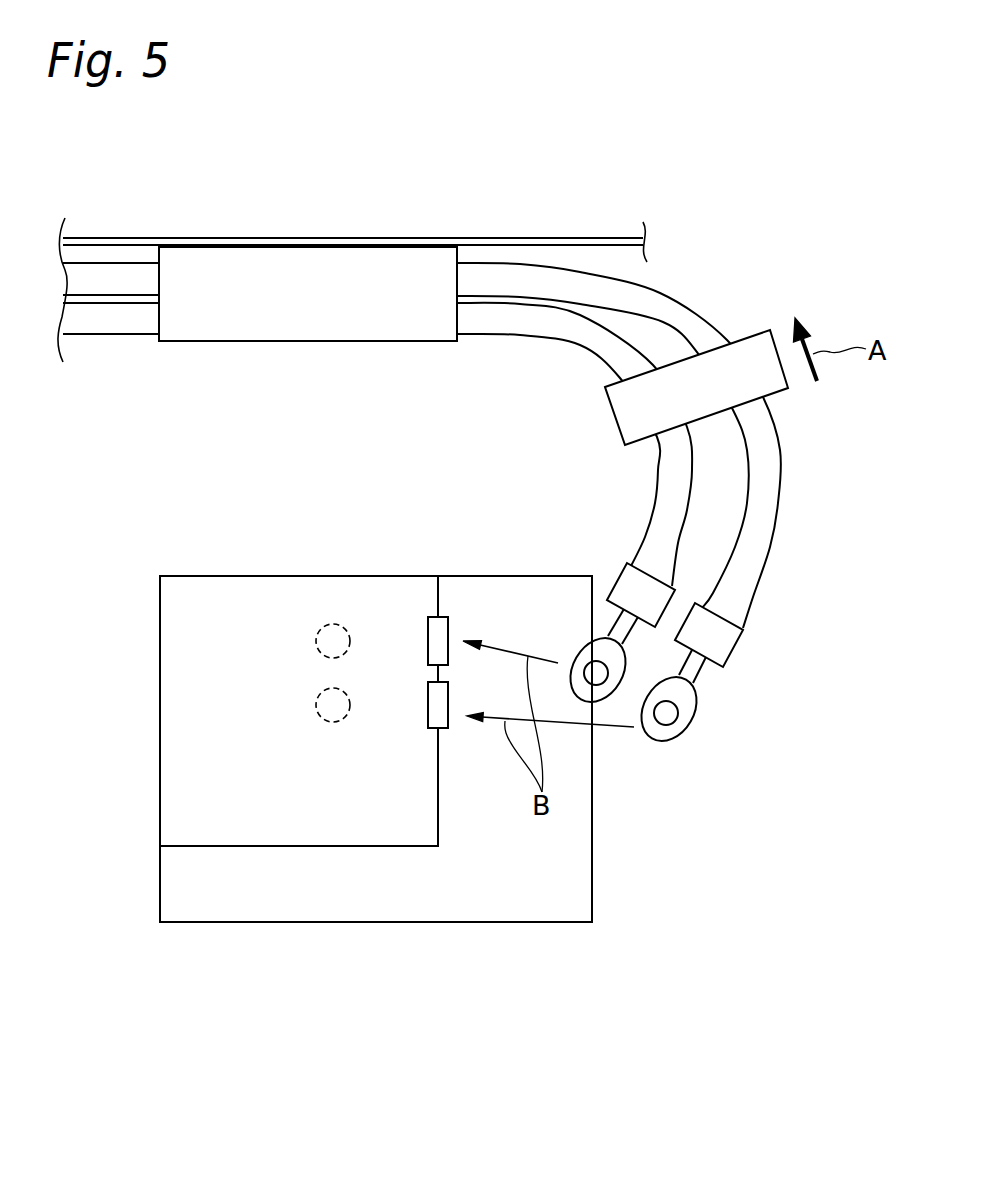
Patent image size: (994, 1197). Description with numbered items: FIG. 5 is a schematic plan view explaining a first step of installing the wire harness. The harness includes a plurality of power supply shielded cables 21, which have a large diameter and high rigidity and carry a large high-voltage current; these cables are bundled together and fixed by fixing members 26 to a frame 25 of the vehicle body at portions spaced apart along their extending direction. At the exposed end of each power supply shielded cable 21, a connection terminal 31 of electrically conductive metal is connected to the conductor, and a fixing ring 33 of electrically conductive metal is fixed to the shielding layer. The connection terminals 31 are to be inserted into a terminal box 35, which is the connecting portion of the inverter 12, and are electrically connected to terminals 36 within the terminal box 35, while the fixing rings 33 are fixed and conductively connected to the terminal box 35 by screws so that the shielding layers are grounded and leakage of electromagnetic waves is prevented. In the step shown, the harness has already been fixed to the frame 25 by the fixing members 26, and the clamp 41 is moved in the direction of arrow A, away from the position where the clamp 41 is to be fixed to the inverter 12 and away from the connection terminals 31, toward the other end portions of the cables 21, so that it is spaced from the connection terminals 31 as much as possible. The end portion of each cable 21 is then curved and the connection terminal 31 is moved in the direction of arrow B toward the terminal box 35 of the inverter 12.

The inverter 12 is at (413, 912).
The power supply shielded cable 21 is at (625, 350).
The frame 25 is at (518, 237).
The fixing member 26 is at (340, 268).
The connection terminal 31 is at (583, 655).
The fixing ring 33 is at (623, 580).
The terminal box 35 is at (305, 828).
The terminal 36 is at (316, 638).
The clamp 41 is at (608, 405).